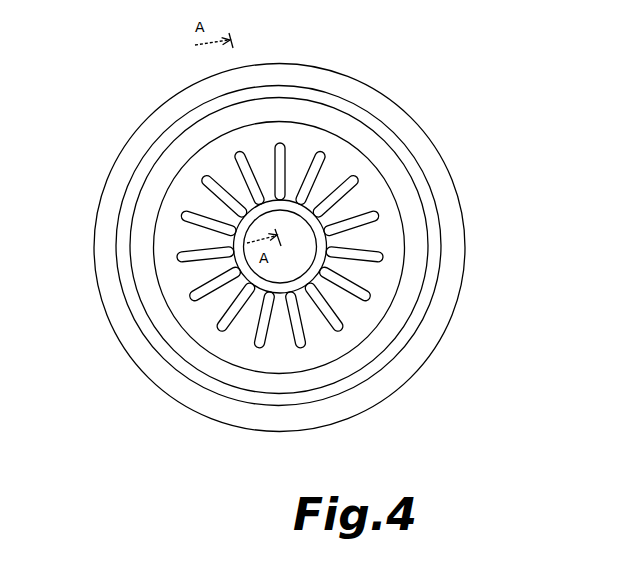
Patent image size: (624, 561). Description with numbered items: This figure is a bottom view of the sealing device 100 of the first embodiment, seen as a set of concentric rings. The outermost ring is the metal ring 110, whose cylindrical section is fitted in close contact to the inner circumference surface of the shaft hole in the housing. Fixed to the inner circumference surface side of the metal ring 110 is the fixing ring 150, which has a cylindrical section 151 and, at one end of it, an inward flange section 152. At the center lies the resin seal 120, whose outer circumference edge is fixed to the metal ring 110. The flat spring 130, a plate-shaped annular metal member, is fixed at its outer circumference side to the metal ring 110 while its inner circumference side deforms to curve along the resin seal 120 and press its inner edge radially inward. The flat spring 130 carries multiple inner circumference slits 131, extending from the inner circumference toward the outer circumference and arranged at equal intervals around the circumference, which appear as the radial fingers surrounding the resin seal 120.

The sealing device 100 is at (470, 123).
The metal ring 110 is at (450, 220).
The resin seal 120 is at (318, 216).
The flat spring 130 is at (243, 333).
The inner circumference slits 131 is at (302, 343).
The fixing ring 150 is at (443, 270).
The cylindrical section 151 is at (420, 317).
The inward flange section 152 is at (177, 337).